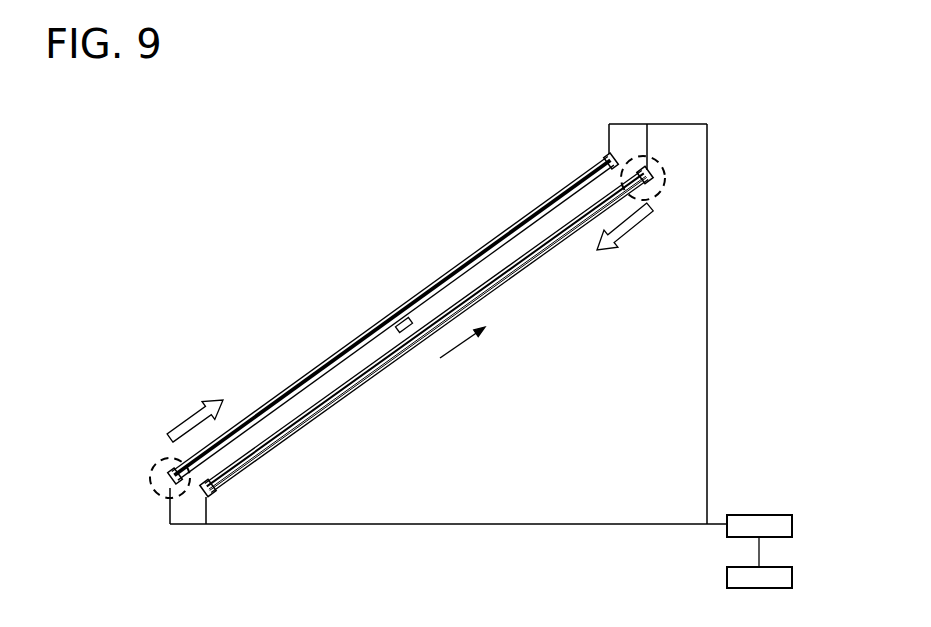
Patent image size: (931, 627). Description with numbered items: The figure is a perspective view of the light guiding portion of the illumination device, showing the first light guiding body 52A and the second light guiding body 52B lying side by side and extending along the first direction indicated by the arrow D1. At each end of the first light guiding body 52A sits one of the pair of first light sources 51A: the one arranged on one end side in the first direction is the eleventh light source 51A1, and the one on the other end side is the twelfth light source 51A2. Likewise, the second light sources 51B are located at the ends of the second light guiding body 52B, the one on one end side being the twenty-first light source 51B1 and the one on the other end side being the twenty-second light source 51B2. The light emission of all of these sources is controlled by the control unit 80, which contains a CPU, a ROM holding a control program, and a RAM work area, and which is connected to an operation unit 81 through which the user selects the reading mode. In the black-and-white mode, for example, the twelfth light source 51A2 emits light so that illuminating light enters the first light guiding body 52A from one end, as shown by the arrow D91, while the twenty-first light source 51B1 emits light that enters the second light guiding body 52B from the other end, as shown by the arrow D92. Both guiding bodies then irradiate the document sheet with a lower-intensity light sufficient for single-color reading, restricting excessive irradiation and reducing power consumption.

The first light source 51A is at (342, 323).
The eleventh light source 51A1 is at (607, 156).
The twelfth light source 51A2 is at (166, 478).
The second light source 51B is at (452, 331).
The twenty-first light source 51B1 is at (651, 173).
The twenty-second light source 51B2 is at (216, 493).
The first light guiding body 52A is at (332, 357).
The second light guiding body 52B is at (350, 394).
The arrow indicating light entry into first light guiding body D91 is at (188, 417).
The arrow indicating light entry into second light guiding body D92 is at (636, 226).
The first direction D1 is at (462, 344).
The control unit 80 is at (770, 515).
The operation unit 81 is at (770, 567).